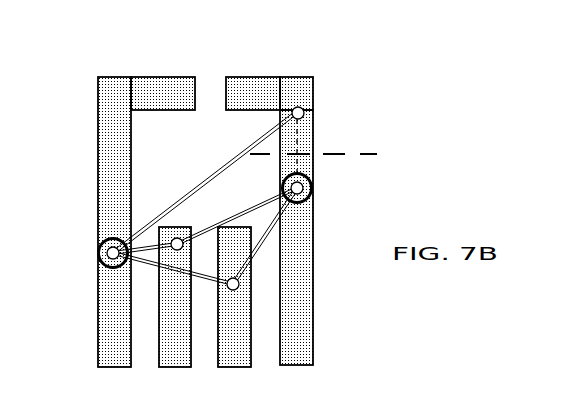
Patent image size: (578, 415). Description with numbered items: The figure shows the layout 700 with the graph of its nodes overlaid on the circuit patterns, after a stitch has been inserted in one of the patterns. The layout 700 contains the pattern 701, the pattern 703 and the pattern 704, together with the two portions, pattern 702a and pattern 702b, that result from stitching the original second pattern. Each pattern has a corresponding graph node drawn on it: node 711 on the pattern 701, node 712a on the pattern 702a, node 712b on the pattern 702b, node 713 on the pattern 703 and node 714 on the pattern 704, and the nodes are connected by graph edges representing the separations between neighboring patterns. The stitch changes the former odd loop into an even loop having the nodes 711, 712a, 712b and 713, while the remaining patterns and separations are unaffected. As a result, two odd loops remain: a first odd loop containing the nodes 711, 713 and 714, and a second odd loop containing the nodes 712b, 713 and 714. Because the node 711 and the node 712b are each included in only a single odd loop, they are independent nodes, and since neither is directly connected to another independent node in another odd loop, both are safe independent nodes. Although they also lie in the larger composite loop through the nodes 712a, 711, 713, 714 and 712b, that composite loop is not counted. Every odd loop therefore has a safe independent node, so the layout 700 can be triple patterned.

The layout 700 is at (338, 52).
The pattern 701 is at (155, 77).
The pattern 702a is at (313, 108).
The pattern 702b is at (313, 335).
The pattern 703 is at (172, 368).
The pattern 704 is at (236, 368).
The node 711 is at (97, 253).
The node 712a is at (298, 107).
The node 712b is at (313, 188).
The node 713 is at (178, 238).
The node 714 is at (240, 284).